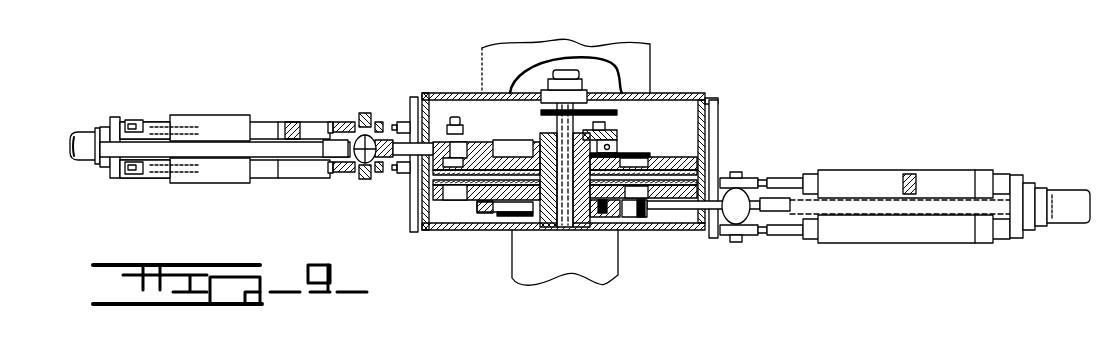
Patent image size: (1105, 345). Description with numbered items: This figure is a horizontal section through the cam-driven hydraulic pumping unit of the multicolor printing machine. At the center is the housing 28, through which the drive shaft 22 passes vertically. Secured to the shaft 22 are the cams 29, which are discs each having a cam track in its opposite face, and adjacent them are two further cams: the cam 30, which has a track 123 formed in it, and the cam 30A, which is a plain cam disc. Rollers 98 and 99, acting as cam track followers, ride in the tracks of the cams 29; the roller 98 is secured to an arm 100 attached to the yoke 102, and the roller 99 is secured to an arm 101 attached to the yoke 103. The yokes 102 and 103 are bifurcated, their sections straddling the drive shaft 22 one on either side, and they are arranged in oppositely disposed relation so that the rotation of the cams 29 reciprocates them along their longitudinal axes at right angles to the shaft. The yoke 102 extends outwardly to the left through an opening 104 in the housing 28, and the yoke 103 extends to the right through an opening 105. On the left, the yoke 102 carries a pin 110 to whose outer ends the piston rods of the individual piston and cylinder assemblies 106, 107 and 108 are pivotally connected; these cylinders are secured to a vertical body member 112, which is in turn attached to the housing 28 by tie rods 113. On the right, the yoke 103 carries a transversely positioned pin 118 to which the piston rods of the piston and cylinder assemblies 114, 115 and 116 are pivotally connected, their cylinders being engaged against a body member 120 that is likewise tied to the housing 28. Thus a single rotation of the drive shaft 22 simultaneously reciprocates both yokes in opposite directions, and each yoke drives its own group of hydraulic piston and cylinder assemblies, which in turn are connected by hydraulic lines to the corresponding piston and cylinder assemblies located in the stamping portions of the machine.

The drive shaft 22 is at (558, 229).
The housing 28 is at (675, 95).
The cams 29 is at (497, 160).
The cam 30 is at (617, 135).
The cam 30A is at (595, 112).
The roller 98 is at (480, 152).
The roller 99 is at (645, 218).
The arm 100 is at (450, 130).
The arm 101 is at (640, 222).
The yoke 102 is at (618, 148).
The yoke 103 is at (485, 212).
The opening 104 is at (418, 95).
The opening 105 is at (722, 185).
The piston and cylinder assembly 106 is at (282, 118).
The piston and cylinder assembly 107 is at (285, 170).
The piston and cylinder assembly 108 is at (316, 115).
The pin 110 is at (364, 117).
The vertical body member 112 is at (110, 117).
The tie rods 113 is at (140, 119).
The piston and cylinder assembly 114 is at (848, 180).
The piston and cylinder assembly 115 is at (853, 238).
The piston and cylinder assembly 116 is at (935, 175).
The pin 118 is at (740, 243).
The body member 120 is at (1023, 172).
The track 123 is at (600, 130).